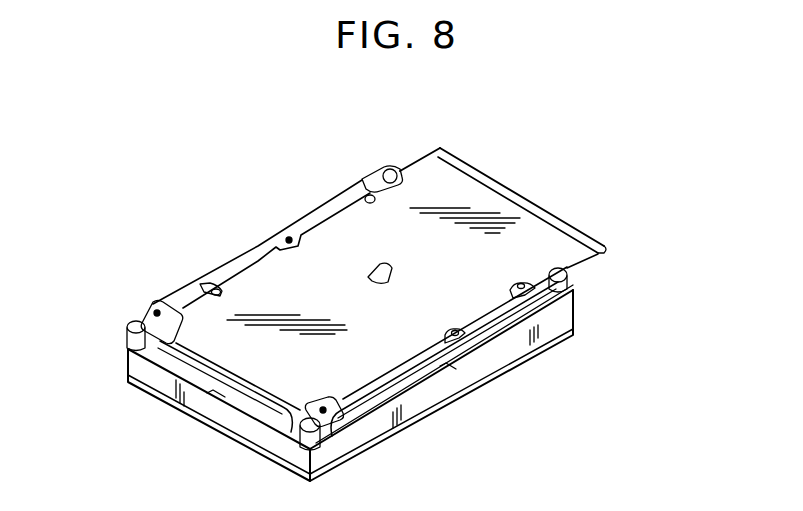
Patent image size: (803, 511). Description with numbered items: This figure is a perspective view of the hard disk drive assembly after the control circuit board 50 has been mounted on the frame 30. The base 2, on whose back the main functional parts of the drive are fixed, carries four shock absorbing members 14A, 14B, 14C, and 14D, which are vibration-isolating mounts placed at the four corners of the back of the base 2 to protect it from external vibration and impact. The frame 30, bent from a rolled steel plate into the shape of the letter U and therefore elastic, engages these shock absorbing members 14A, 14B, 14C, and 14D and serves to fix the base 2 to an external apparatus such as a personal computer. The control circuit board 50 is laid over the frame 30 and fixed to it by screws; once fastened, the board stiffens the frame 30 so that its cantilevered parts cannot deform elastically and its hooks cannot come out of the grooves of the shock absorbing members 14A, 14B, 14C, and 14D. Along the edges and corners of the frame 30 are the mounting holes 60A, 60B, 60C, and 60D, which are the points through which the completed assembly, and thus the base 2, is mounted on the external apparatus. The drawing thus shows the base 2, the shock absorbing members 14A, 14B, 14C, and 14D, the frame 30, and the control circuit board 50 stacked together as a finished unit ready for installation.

The base 2 is at (468, 380).
The frame 30 is at (500, 328).
The control circuit board 50 is at (498, 192).
The mounting hole 60A is at (289, 237).
The mounting hole 60B is at (379, 292).
The mounting hole 60C is at (157, 310).
The mounting hole 60D is at (323, 408).
The shock absorbing member 14A is at (392, 168).
The shock absorbing member 14B is at (567, 283).
The shock absorbing member 14C is at (128, 334).
The shock absorbing member 14D is at (312, 449).